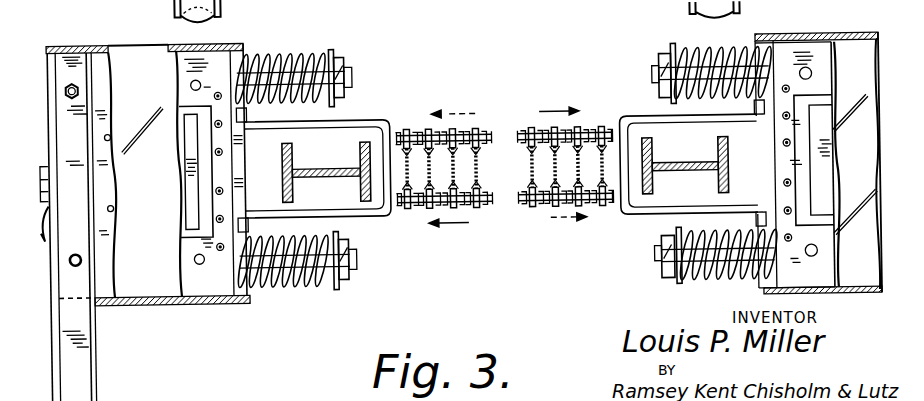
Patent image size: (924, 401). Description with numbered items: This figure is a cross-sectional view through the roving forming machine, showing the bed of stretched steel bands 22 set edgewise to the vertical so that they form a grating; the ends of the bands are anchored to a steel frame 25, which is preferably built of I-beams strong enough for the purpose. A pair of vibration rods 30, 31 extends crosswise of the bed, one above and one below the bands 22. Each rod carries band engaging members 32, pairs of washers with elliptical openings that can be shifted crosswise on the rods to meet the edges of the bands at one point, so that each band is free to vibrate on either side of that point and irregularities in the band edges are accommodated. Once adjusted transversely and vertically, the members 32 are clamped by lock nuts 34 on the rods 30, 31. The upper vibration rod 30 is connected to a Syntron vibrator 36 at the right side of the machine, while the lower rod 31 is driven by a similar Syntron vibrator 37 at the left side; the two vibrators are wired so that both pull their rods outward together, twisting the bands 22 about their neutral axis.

The steel bands 22 is at (430, 178).
The steel frame 25 is at (340, 170).
The vibration rod 30 is at (488, 142).
The vibration rod 31 is at (489, 204).
The band engaging members 32 is at (428, 130).
The lock nuts 34 is at (429, 206).
The Syntron vibrator 36 is at (808, 165).
The Syntron vibrator 37 is at (218, 297).